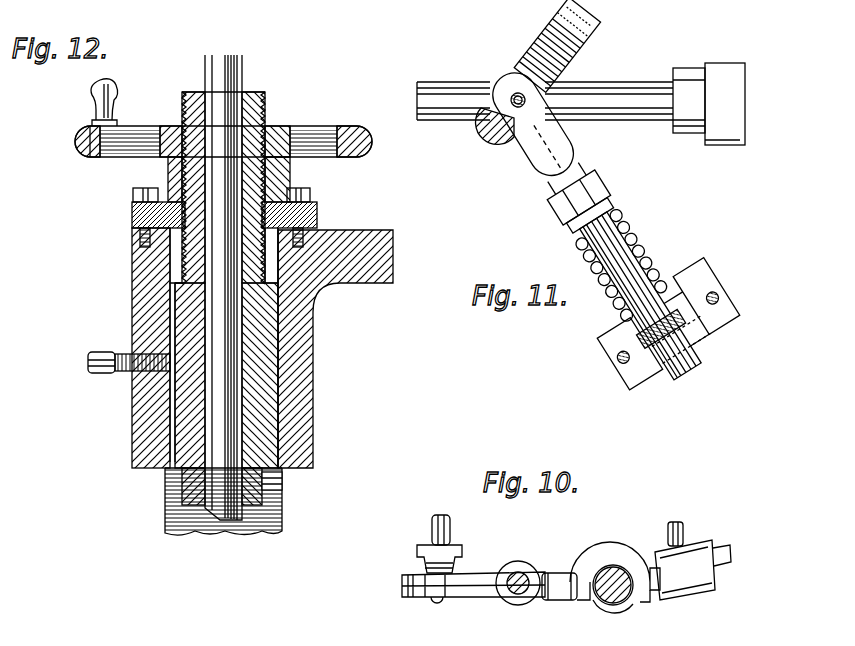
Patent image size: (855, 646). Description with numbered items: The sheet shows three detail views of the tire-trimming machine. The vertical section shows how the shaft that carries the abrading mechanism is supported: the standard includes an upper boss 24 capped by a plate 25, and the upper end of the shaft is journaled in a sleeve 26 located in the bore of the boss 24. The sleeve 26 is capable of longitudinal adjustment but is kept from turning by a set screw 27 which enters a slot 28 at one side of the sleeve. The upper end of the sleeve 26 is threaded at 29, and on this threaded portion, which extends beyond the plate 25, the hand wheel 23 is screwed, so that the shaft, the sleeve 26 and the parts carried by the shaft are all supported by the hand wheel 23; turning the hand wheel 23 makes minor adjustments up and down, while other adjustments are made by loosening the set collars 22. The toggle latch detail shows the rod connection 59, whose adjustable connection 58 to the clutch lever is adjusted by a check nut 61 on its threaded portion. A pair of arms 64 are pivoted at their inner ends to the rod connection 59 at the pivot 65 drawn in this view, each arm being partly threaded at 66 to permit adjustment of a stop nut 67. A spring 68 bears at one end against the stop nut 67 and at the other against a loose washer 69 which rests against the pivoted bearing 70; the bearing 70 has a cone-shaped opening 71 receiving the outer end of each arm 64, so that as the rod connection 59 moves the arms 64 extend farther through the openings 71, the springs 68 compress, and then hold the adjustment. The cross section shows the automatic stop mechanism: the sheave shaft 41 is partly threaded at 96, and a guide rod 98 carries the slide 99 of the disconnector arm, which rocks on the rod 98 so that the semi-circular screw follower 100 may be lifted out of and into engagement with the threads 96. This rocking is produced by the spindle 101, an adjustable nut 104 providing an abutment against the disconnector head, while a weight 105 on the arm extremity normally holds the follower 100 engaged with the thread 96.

In FIG. 12, the set collars 22 is at (167, 483).
In FIG. 12, the hand wheel 23 is at (118, 128).
In FIG. 12, the upper boss 24 is at (135, 277).
In FIG. 12, the plate 25 is at (132, 215).
In FIG. 12, the sleeve 26 is at (267, 375).
In FIG. 12, the set screw 27 is at (100, 370).
In FIG. 12, the slot 28 is at (177, 410).
In FIG. 12, the threaded portion 29 is at (260, 103).
In FIG. 11, the adjustable connection 58 is at (727, 67).
In FIG. 11, the rod connection 59 is at (440, 87).
In FIG. 11, the check nut 61 is at (688, 78).
In FIG. 11, the arms 64 is at (650, 245).
In FIG. 11, the clamp 65 is at (513, 90).
In FIG. 11, the threaded portion of arm 66 is at (585, 158).
In FIG. 11, the stop nut 67 is at (612, 185).
In FIG. 11, the spring 68 is at (585, 257).
In FIG. 11, the loose washer 69 is at (623, 315).
In FIG. 11, the pivoted bearing 70 is at (642, 368).
In FIG. 11, the cone-shaped opening 71 is at (632, 327).
In FIG. 10, the sheave shaft 41 is at (613, 607).
In FIG. 10, the threads 96 is at (625, 592).
In FIG. 10, the guide rod 98 is at (522, 602).
In FIG. 10, the slide 99 is at (527, 572).
In FIG. 10, the semi-circular screw follower 100 is at (617, 560).
In FIG. 10, the spindle 101 is at (437, 603).
In FIG. 10, the adjustable nut 104 is at (445, 550).
In FIG. 10, the weight 105 is at (695, 573).